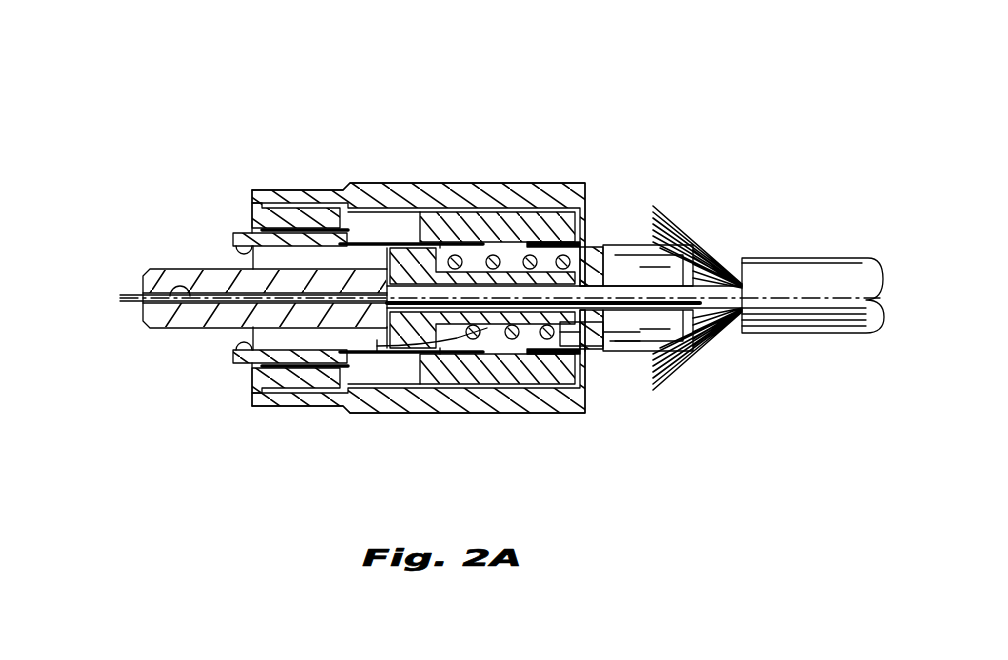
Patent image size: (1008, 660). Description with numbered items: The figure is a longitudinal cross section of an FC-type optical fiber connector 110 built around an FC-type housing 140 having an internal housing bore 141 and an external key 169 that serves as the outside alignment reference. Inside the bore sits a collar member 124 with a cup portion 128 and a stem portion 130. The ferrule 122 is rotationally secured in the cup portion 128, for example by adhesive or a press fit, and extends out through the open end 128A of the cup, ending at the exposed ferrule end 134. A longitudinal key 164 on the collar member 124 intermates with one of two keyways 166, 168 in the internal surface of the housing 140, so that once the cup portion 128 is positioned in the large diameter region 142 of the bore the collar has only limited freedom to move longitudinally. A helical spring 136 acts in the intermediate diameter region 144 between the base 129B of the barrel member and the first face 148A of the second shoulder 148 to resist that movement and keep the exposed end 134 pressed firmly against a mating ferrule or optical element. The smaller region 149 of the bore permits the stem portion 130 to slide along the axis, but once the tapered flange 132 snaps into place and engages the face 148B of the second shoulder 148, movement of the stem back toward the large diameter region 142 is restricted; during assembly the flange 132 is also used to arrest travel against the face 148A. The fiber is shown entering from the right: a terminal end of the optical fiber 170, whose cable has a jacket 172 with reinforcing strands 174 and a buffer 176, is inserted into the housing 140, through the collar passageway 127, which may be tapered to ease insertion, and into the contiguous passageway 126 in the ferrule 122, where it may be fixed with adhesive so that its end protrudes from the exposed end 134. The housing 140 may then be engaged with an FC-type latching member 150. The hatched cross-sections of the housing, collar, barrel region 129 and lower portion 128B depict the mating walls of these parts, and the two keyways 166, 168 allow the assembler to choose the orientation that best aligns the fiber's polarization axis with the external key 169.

The FC-type optical fiber connector 110 is at (596, 78).
The ferrule 122 is at (160, 270).
The collar member 124 is at (622, 348).
The ferrule passageway 126 is at (182, 292).
The collar passageway 127 is at (595, 247).
The cup portion 128 is at (342, 352).
The open end of the cup portion 128A is at (325, 215).
The housing lower portion 128B is at (383, 415).
The inner sleeve 129 is at (411, 414).
The base of the barrel member 129B is at (475, 400).
The stem portion 130 is at (510, 250).
The tapered flange 132 is at (628, 262).
The exposed ferrule end 134 is at (145, 313).
The helical spring 136 is at (499, 365).
The FC-type housing 140 is at (236, 212).
The housing bore 141 is at (240, 347).
The large diameter region 142 is at (240, 250).
The intermediate diameter region 144 is at (493, 250).
The second shoulder 148 is at (563, 352).
The first face of the second shoulder 148A is at (548, 355).
The face of the second shoulder 148B is at (618, 352).
The smaller region of the housing bore 149 is at (596, 352).
The FC-type latching member 150 is at (307, 200).
The longitudinal key 164 is at (411, 212).
The keyway 166 is at (447, 212).
The keyway 168 is at (437, 386).
The external key 169 is at (290, 208).
The optical fiber 170 is at (130, 297).
The jacket 172 is at (815, 268).
The reinforcing strands 174 is at (683, 362).
The buffer 176 is at (717, 292).